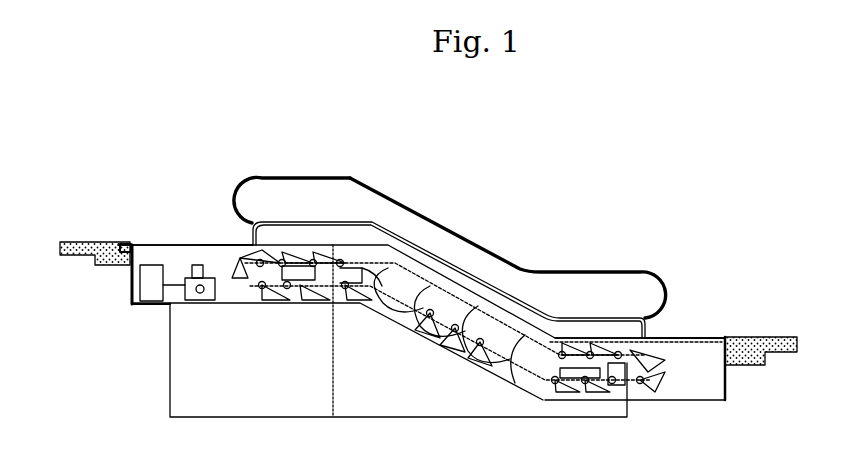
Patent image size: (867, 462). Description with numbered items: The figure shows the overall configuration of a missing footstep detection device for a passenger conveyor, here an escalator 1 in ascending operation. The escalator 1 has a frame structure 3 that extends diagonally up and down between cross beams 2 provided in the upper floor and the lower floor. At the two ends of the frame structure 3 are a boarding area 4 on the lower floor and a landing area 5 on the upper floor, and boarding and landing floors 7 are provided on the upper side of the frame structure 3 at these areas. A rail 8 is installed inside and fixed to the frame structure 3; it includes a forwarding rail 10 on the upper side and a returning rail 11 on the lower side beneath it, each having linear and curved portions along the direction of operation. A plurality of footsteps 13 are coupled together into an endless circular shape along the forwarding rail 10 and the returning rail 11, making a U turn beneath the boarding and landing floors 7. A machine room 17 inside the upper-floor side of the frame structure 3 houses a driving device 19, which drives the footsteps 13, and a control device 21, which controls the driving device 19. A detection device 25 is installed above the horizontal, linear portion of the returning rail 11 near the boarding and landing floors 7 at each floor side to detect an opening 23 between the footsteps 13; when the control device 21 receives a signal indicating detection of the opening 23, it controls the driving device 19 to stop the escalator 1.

The escalator 1 is at (450, 249).
The cross beams 2 is at (428, 310).
The frame structure 3 is at (129, 274).
The boarding area 4 is at (640, 299).
The landing area 5 is at (185, 199).
The boarding and landing floors 7 is at (457, 274).
The rail 8 is at (361, 299).
The forwarding rail 10 is at (463, 322).
The returning rail 11 is at (447, 324).
The footsteps 13 is at (264, 296).
The machine room 17 is at (137, 231).
The driving device 19 is at (204, 301).
The control device 21 is at (159, 301).
The opening 23 is at (298, 213).
The detection device 25 is at (592, 311).